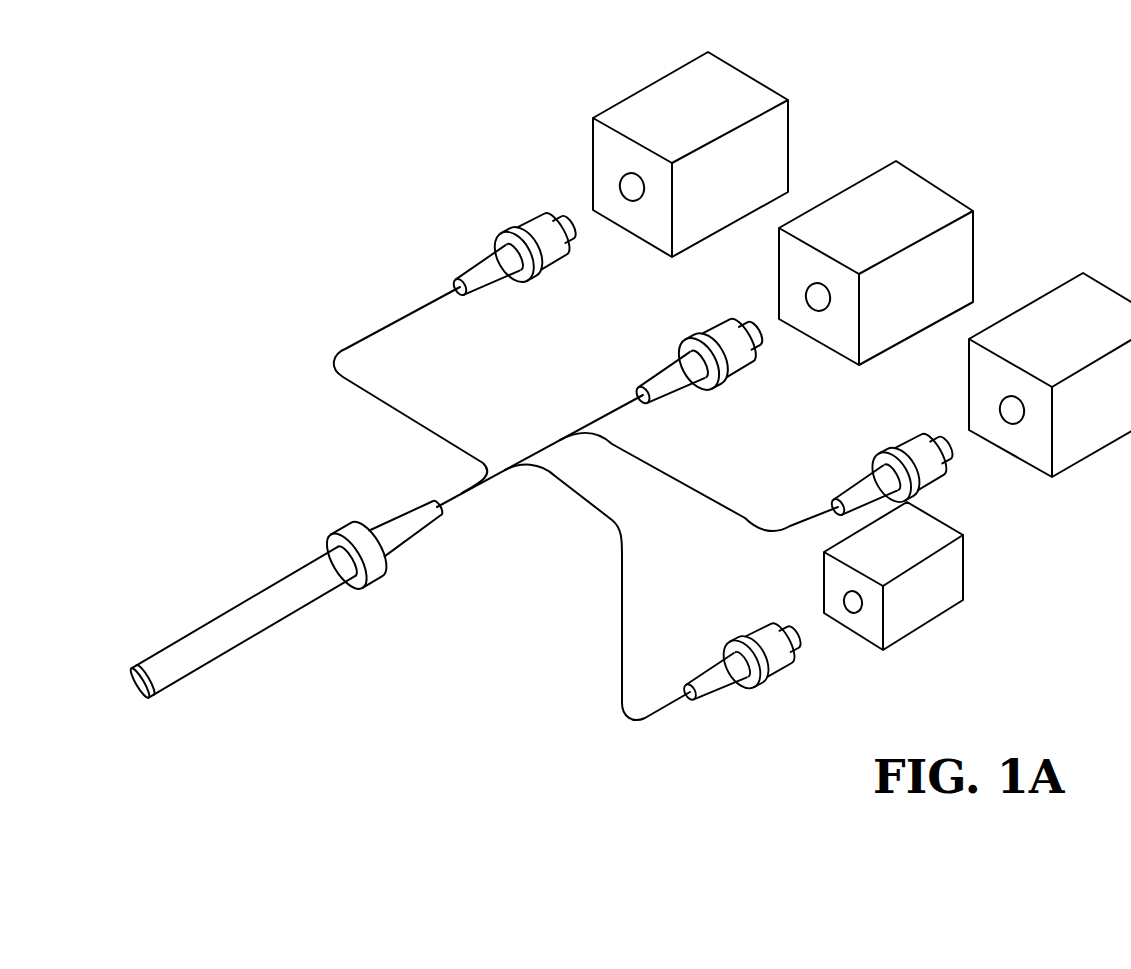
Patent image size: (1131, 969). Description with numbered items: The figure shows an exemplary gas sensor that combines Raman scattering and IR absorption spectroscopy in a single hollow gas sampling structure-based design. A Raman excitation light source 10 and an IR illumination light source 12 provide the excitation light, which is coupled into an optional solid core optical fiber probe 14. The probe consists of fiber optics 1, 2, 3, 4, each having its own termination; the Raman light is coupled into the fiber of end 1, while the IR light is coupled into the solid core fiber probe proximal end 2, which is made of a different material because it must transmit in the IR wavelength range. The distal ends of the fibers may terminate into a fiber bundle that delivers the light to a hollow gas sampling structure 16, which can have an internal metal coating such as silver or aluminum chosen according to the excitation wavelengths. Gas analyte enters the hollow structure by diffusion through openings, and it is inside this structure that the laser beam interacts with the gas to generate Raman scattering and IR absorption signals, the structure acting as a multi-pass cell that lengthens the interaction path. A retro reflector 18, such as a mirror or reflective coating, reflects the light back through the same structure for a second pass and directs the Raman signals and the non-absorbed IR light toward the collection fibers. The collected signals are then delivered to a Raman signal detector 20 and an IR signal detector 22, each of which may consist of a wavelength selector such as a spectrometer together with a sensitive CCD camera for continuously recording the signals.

The fiber optic termination 1 is at (750, 625).
The solid core fiber probe proximal end 2 is at (890, 445).
The fiber optic termination 3 is at (700, 335).
The fiber optic termination 4 is at (530, 225).
The Raman excitation light source 10 is at (880, 560).
The IR illumination light source 12 is at (1076, 347).
The solid core optical fiber probe 14 is at (466, 502).
The hollow gas sampling structure 16 is at (262, 600).
The retro reflector 18 is at (143, 698).
The Raman signal detector 20 is at (858, 232).
The IR signal detector 22 is at (676, 122).